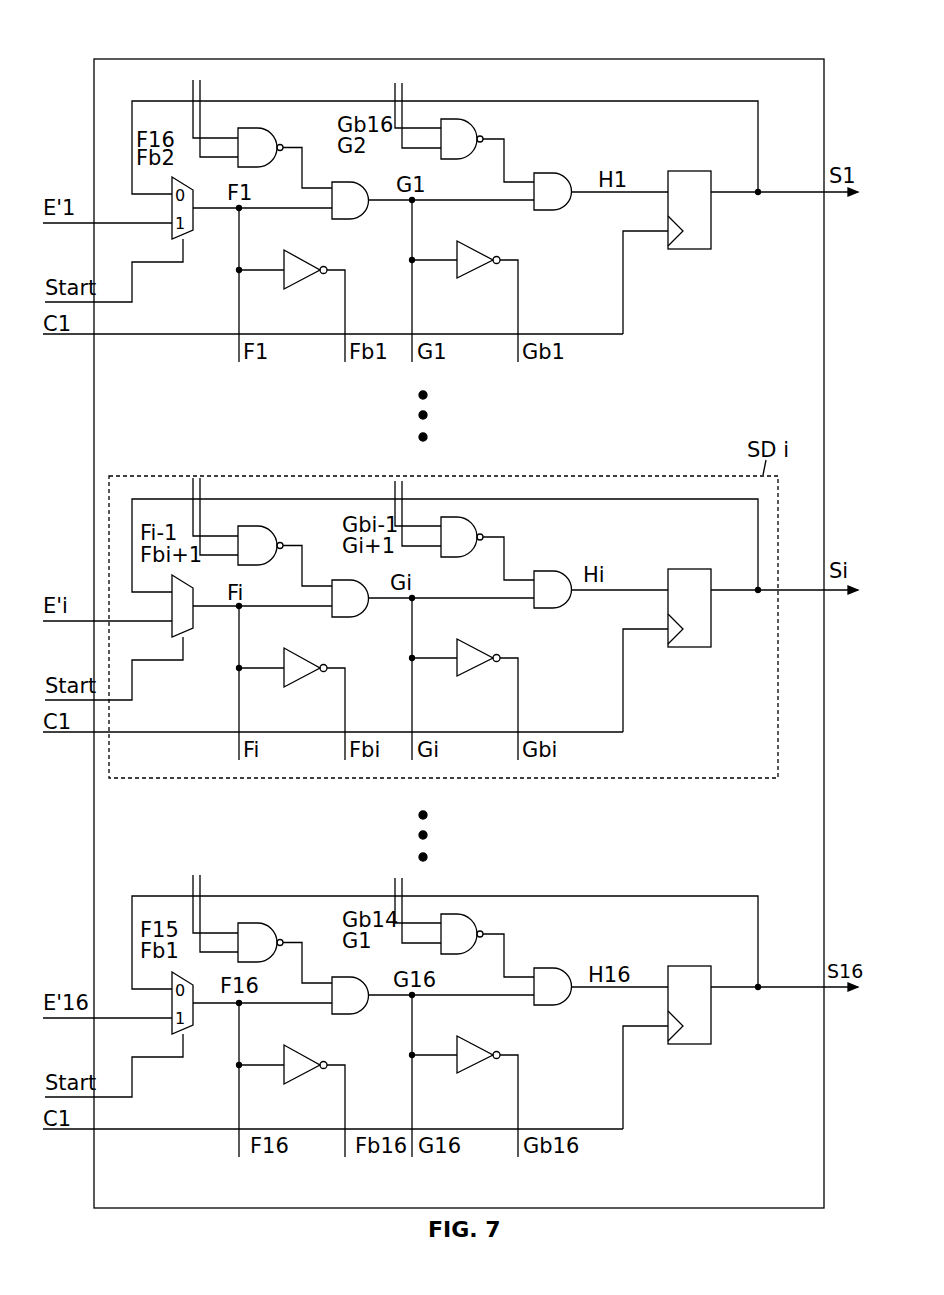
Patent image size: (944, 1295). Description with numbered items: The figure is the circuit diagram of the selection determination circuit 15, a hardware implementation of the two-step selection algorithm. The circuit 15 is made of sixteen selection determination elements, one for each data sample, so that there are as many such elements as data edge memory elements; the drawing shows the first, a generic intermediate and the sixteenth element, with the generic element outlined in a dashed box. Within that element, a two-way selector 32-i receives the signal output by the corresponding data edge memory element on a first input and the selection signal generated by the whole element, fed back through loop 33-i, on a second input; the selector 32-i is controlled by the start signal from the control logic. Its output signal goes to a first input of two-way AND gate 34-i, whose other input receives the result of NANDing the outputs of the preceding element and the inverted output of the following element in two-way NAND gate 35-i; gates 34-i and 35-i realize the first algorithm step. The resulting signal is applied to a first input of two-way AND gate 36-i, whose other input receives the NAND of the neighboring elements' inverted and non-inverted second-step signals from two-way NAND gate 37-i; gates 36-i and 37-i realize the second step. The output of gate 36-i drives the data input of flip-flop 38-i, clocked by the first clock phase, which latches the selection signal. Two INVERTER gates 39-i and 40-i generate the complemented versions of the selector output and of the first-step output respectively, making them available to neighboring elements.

The selection determination circuit 15 is at (703, 42).
The two-way selector 32-i is at (202, 627).
The loop 33-i is at (446, 546).
The two-way AND gate 34-i is at (363, 617).
The two-way NAND gate 35-i is at (263, 565).
The two-way AND gate 36-i is at (570, 608).
The two-way NAND gate 37-i is at (464, 555).
The flip-flop 38-i is at (702, 630).
The INVERTER gate 39-i is at (309, 685).
The INVERTER gate 40-i is at (483, 675).